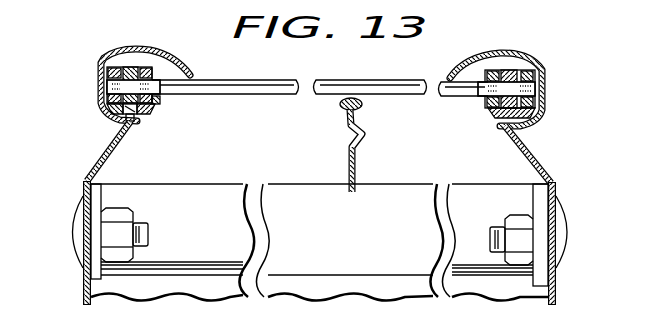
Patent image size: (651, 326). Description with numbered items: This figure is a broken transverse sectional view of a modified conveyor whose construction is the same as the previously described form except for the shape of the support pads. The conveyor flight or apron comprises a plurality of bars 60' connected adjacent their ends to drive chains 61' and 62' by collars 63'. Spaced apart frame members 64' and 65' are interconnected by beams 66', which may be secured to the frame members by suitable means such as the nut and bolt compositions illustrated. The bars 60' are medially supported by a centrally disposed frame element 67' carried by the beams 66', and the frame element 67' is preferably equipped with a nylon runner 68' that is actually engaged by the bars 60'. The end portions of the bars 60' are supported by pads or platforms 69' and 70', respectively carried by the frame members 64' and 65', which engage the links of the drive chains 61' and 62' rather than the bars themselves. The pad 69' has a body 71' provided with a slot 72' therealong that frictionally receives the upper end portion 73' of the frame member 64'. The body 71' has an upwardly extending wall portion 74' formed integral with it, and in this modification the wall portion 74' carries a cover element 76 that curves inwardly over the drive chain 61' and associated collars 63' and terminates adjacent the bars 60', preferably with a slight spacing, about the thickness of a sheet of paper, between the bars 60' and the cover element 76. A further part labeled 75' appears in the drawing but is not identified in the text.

The bars 60' is at (320, 73).
The drive chain 61' is at (129, 53).
The drive chain 62' is at (514, 76).
The collars 63' is at (173, 66).
The frame member 64' is at (76, 213).
The frame member 65' is at (554, 215).
The beams 66' is at (319, 227).
The frame element 67' is at (377, 151).
The nylon runner 68' is at (375, 112).
The support pad 69' is at (84, 119).
The support pad 70' is at (519, 95).
The body 71' is at (164, 119).
The slot 72' is at (149, 135).
The upper end portion 73' is at (101, 128).
The wall portion 74' is at (80, 85).
The side block 75' is at (177, 106).
The cover element 76 is at (143, 48).